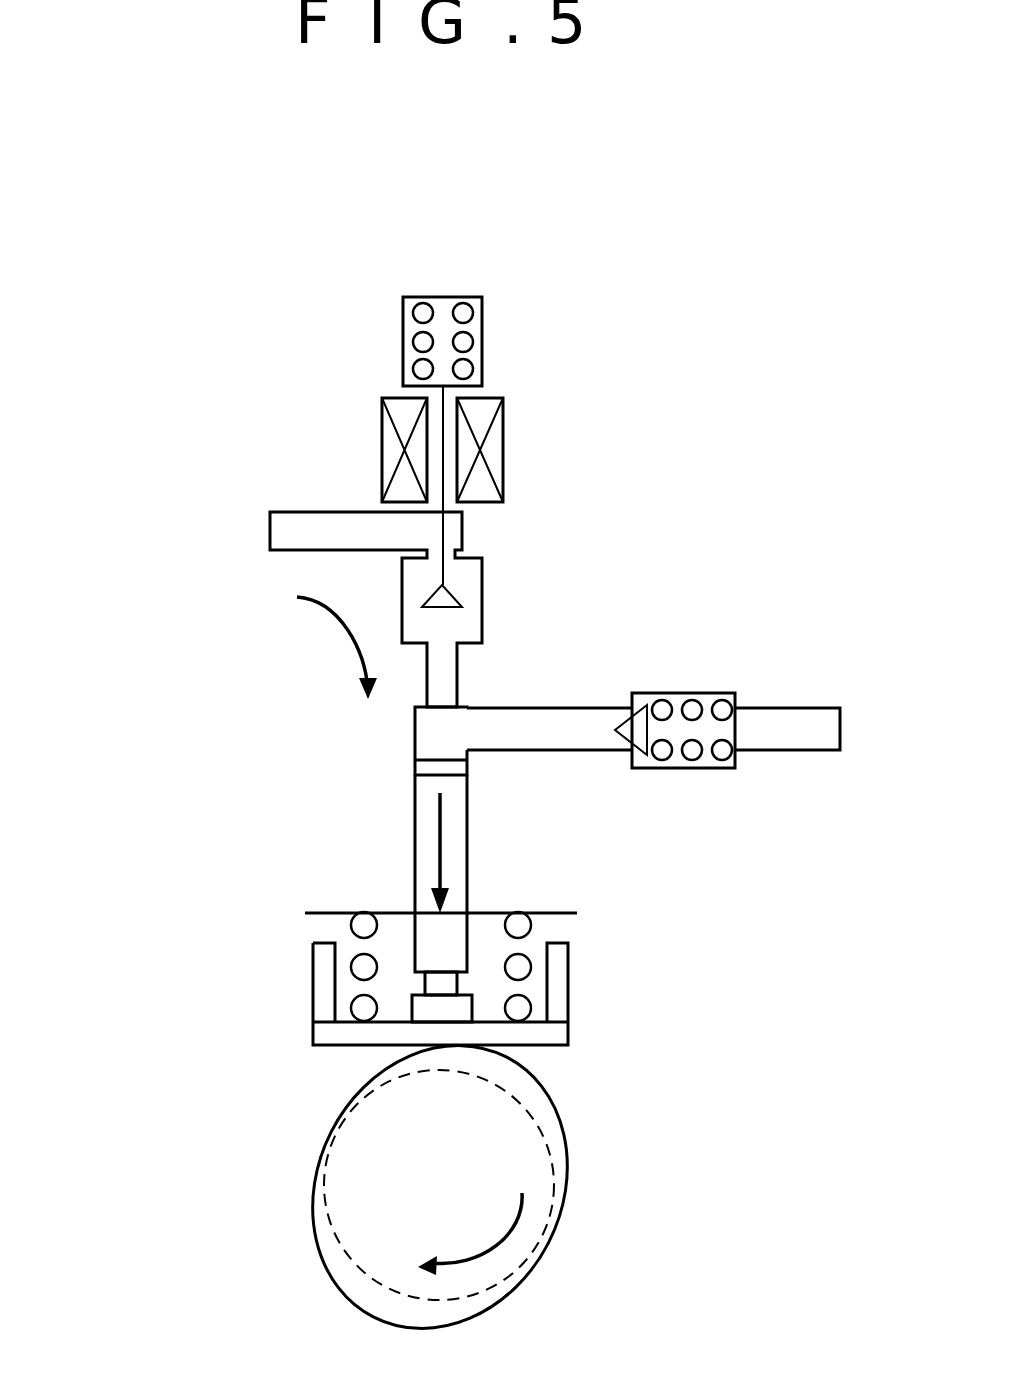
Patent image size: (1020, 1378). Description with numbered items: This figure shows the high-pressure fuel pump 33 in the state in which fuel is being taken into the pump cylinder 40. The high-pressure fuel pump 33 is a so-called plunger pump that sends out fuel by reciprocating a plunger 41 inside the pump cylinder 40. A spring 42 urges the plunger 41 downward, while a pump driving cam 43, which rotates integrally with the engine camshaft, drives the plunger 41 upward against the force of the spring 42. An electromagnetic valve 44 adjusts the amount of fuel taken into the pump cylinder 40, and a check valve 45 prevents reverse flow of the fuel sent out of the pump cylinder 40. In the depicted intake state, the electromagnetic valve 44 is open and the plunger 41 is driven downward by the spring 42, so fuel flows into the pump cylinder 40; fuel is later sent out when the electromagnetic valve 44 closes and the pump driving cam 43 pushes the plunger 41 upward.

The high-pressure fuel pump 33 is at (243, 392).
The electromagnetic valve 44 is at (515, 372).
The check valve 45 is at (683, 692).
The pump cylinder 40 is at (415, 733).
The plunger 41 is at (455, 819).
The spring 42 is at (533, 922).
The pump driving cam 43 is at (540, 1250).